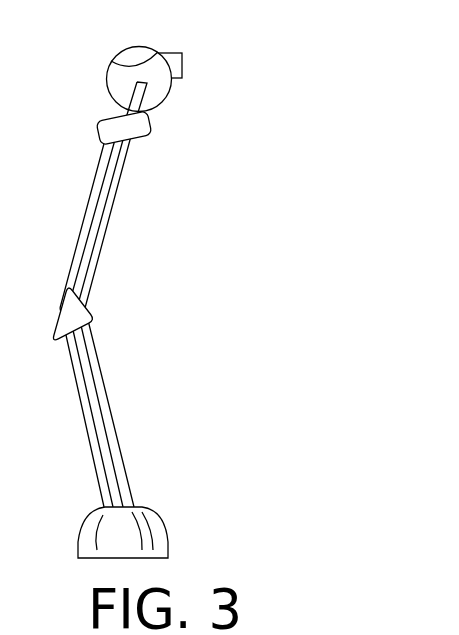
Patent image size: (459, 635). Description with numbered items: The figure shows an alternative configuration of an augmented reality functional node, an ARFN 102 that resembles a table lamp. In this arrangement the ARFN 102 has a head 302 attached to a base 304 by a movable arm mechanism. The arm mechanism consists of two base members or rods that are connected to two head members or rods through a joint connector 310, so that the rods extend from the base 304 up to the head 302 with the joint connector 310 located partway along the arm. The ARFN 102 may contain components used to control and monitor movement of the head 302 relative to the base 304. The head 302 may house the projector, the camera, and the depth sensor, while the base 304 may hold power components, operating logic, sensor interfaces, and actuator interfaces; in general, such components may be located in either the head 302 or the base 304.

The ARFN 102 is at (207, 305).
The head 302 is at (168, 104).
The base 304 is at (175, 535).
The joint connector 310 is at (77, 318).